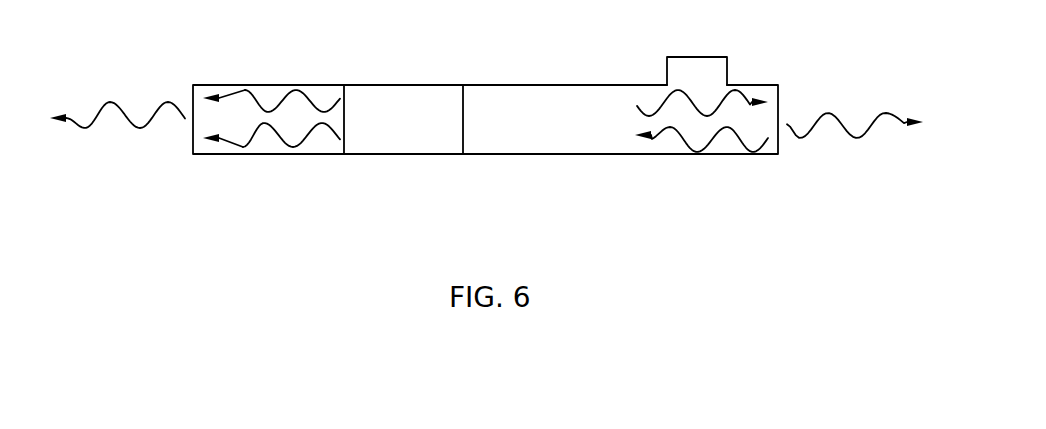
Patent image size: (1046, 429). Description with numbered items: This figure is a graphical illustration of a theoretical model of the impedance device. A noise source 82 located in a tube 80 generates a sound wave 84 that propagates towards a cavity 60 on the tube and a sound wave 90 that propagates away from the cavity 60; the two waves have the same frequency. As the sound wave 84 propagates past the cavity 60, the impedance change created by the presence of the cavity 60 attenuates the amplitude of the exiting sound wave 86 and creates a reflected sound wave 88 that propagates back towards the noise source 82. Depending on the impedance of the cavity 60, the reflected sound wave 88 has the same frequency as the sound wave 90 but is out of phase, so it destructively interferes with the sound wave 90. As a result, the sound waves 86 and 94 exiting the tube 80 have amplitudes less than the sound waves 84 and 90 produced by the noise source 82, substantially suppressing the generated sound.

The cavity 60 is at (692, 65).
The tube 80 is at (490, 86).
The noise source 82 is at (395, 92).
The sound wave 84 is at (663, 100).
The sound wave 86 is at (828, 111).
The reflected sound wave 88 is at (246, 148).
The sound wave 90 is at (248, 91).
The sound wave 94 is at (124, 108).